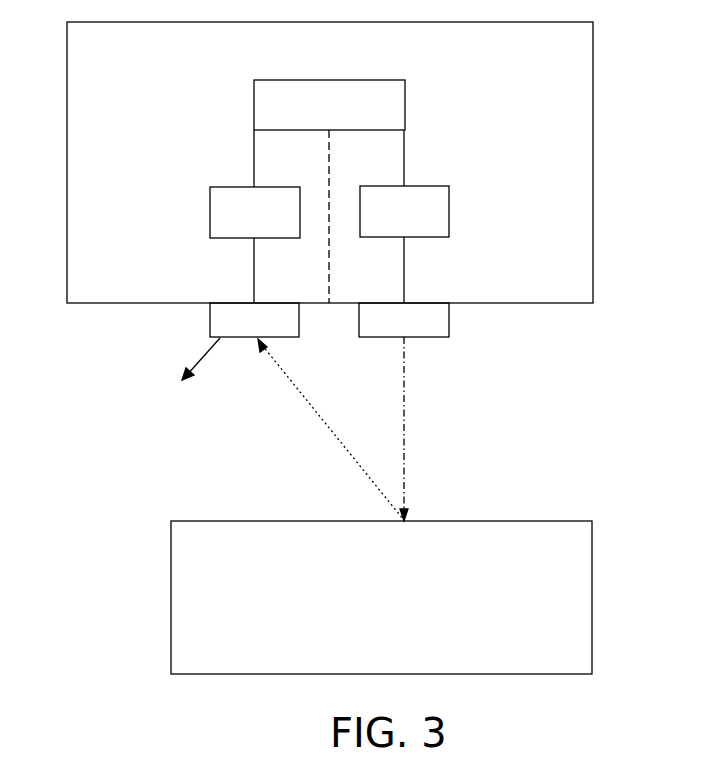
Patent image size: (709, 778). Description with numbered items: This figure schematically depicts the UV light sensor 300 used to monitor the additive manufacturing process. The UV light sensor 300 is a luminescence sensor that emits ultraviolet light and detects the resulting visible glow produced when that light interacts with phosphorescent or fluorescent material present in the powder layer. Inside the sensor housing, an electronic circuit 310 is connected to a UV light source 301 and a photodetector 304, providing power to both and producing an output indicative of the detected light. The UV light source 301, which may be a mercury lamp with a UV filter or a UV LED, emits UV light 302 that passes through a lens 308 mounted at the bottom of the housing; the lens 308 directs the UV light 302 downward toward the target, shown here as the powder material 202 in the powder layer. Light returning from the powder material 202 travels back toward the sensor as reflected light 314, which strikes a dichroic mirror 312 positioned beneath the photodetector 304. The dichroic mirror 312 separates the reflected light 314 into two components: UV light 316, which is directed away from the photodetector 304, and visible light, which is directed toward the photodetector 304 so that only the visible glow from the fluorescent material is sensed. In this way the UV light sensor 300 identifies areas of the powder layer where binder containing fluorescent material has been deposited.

The UV light sensor 300 is at (593, 163).
The electronic circuit 310 is at (354, 119).
The photodetector 304 is at (280, 224).
The UV light source 301 is at (428, 226).
The dichroic mirror 312 is at (211, 321).
The lens 308 is at (449, 320).
The UV light 302 is at (404, 447).
The reflected light 314 is at (316, 420).
The UV light 316 is at (207, 352).
The powder material 202 is at (171, 597).